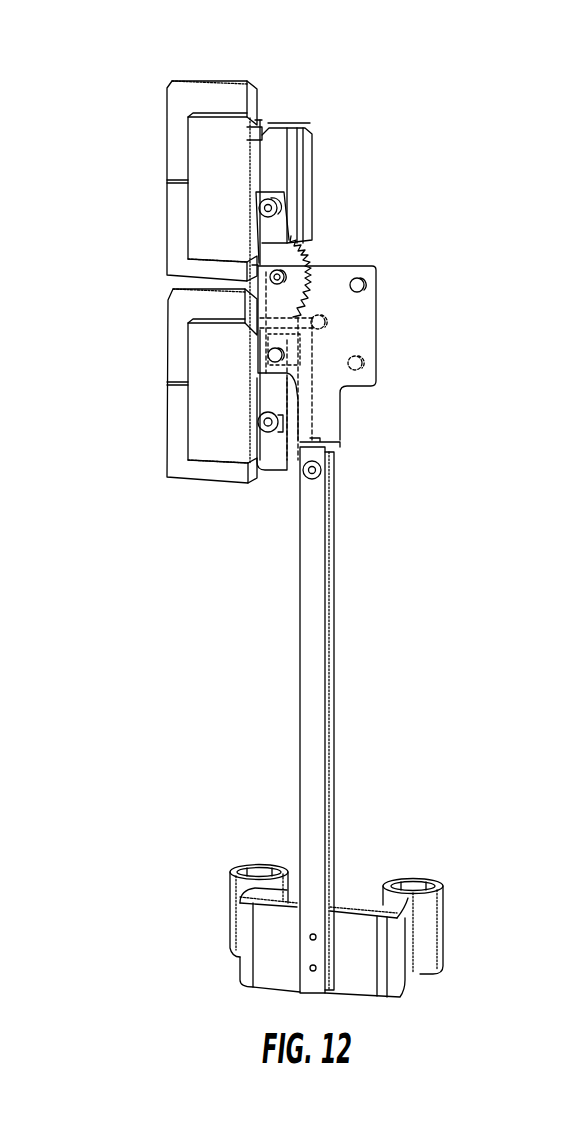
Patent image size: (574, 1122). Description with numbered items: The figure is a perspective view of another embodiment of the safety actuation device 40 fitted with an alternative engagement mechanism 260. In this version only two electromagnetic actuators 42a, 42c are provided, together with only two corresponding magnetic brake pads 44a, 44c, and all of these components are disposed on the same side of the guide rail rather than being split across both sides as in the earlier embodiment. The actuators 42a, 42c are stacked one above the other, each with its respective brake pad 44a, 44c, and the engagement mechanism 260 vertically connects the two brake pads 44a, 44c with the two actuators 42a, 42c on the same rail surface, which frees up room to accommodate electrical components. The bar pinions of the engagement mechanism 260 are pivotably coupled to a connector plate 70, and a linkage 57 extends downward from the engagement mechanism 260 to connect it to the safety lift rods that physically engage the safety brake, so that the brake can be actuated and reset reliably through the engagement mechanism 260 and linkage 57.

The safety actuation device 40 is at (108, 129).
The electromagnetic actuator 42a is at (183, 111).
The electromagnetic actuator 42c is at (179, 469).
The magnetic brake pad 44a is at (300, 178).
The magnetic brake pad 44c is at (297, 419).
The linkage 57 is at (318, 650).
The connector plate 70 is at (358, 320).
The engagement mechanism 260 is at (368, 198).